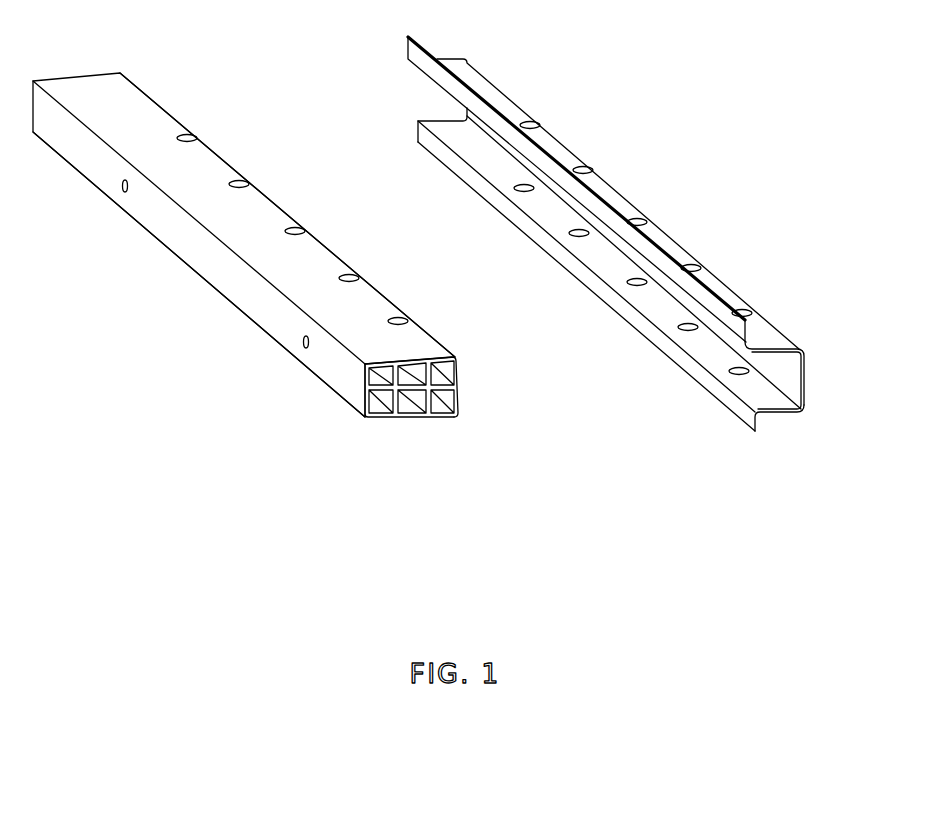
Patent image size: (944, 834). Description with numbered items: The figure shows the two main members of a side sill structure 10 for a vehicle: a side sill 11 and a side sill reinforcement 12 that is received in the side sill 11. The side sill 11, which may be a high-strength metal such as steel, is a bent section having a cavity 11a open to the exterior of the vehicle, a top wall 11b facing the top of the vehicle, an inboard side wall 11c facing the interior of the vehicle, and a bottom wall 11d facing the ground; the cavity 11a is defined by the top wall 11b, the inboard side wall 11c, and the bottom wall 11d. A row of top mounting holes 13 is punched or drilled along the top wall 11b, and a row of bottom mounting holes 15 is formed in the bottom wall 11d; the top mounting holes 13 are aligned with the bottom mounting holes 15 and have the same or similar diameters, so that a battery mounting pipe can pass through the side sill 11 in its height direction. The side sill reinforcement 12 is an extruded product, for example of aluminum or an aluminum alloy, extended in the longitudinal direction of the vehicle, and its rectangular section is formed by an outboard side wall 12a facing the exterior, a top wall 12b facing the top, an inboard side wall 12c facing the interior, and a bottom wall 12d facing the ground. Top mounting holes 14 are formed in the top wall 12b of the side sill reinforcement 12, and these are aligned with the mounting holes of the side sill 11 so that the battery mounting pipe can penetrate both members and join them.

The side sill structure 10 is at (160, 30).
The side sill 11 is at (636, 257).
The cavity 11a is at (664, 305).
The top wall 11b is at (718, 288).
The inboard side wall 11c is at (806, 378).
The bottom wall 11d is at (778, 414).
The side sill reinforcement 12 is at (276, 281).
The outboard side wall 12a is at (348, 394).
The top wall 12b is at (367, 338).
The inboard side wall 12c is at (457, 378).
The bottom wall 12d is at (424, 420).
The top mounting holes 13 is at (529, 122).
The top mounting holes 14 is at (189, 135).
The bottom mounting holes 15 is at (514, 189).